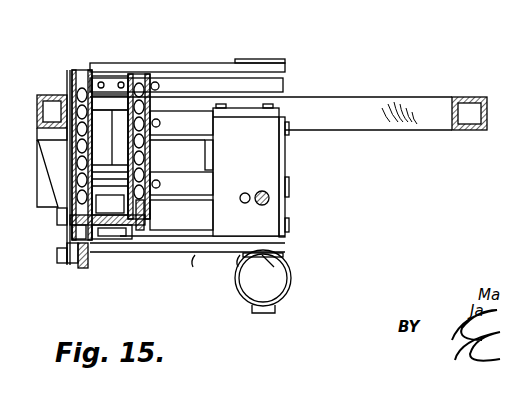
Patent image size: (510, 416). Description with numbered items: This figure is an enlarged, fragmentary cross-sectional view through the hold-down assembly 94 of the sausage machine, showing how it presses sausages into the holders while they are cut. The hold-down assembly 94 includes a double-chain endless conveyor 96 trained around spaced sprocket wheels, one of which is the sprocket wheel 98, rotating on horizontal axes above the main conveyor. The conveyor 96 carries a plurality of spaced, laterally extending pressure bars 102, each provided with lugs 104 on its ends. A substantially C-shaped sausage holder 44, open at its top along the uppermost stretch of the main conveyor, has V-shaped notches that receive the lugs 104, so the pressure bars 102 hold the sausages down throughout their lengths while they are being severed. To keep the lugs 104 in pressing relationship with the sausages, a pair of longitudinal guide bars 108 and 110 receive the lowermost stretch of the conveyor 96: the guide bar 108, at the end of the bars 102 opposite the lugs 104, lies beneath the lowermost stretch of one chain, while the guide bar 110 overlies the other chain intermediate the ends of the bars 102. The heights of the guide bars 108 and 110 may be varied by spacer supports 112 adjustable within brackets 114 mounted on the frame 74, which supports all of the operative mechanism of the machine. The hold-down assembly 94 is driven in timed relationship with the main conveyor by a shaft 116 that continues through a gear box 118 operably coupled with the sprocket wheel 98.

The sausage holder 44 is at (291, 282).
The frame 74 is at (379, 89).
The hold-down assembly 94 is at (140, 63).
The double-chain endless conveyor 96 is at (78, 70).
The sprocket wheel 98 is at (110, 160).
The pressure bar 102 is at (198, 63).
The lug 104 is at (254, 60).
The guide bar 108 is at (84, 268).
The guide bar 110 is at (150, 238).
The spacer support 112 is at (73, 226).
The bracket 114 is at (62, 262).
The shaft 116 is at (270, 198).
The gear box 118 is at (272, 156).